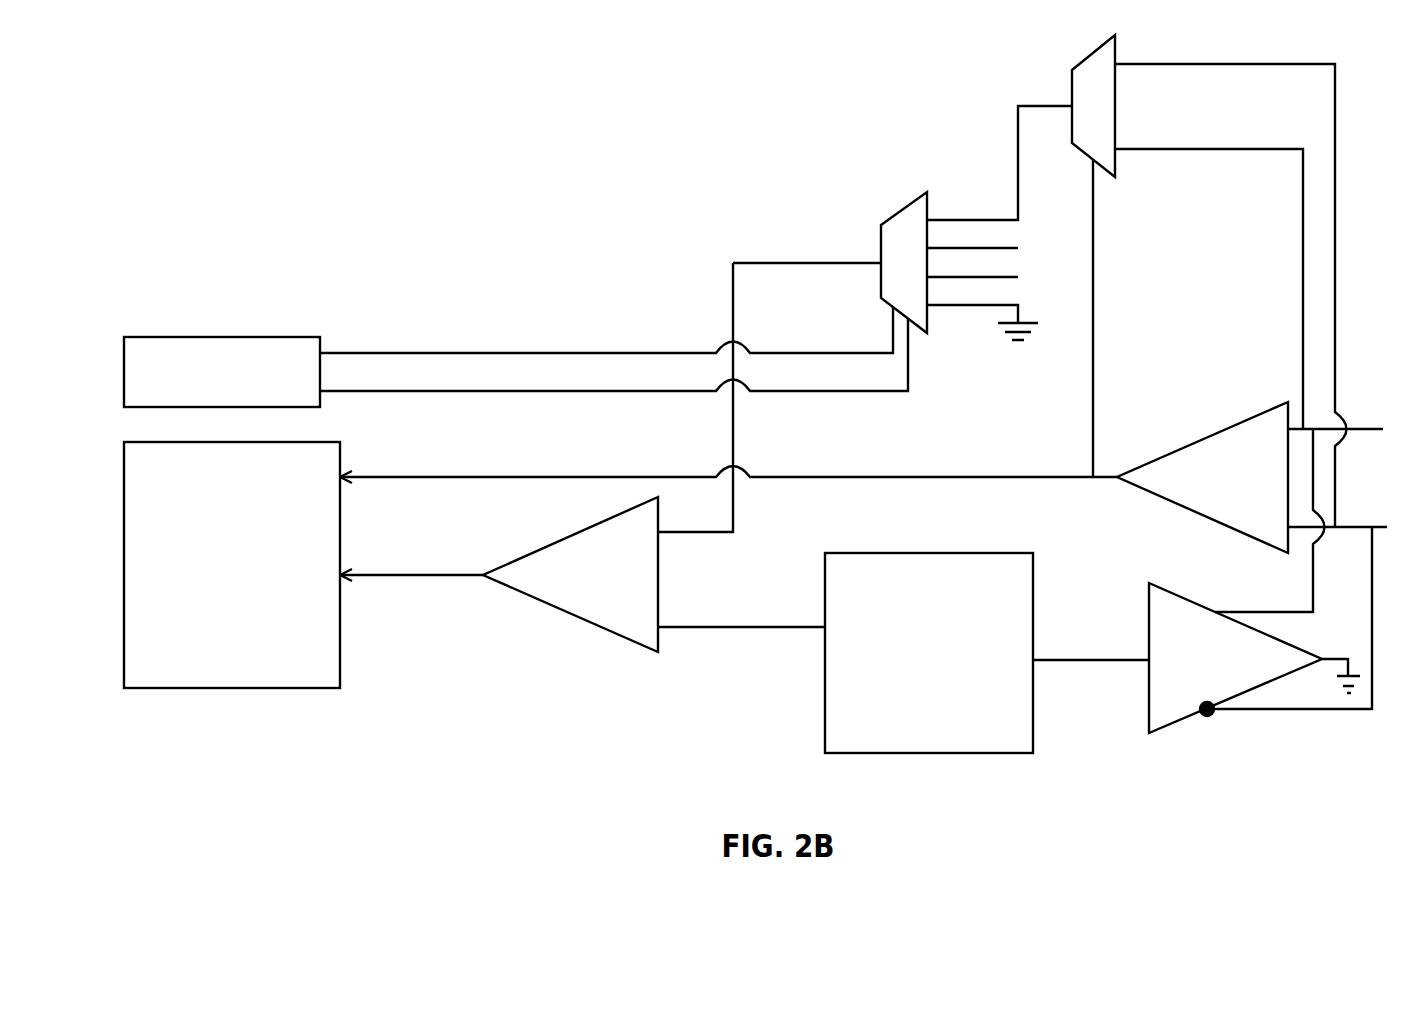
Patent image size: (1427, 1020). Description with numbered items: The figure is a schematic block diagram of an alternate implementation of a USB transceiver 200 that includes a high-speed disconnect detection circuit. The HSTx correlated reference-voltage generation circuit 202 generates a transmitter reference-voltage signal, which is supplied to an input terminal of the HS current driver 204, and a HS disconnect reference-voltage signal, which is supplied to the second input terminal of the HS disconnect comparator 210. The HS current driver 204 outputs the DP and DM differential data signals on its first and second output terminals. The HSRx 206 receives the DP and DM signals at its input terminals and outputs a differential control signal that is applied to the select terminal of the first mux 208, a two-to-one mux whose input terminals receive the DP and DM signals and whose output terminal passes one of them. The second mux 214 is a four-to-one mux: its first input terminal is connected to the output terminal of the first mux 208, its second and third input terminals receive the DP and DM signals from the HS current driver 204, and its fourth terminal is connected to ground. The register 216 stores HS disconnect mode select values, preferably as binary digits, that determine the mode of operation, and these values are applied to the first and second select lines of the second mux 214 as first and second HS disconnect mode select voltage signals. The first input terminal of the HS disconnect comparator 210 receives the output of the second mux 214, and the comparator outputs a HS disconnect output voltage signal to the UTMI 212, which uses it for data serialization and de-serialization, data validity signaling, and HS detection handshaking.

The USB transceiver 200 is at (561, 758).
The HSTx correlated reference-voltage generation circuit 202 is at (900, 753).
The HS current driver 204 is at (1172, 728).
The HS differential data receiver (HSRx) 206 is at (1160, 457).
The first mux 208 is at (1072, 95).
The HS disconnect comparator 210 is at (580, 618).
The UTMI 212 is at (340, 660).
The second mux 214 is at (881, 246).
The register 216 is at (262, 337).